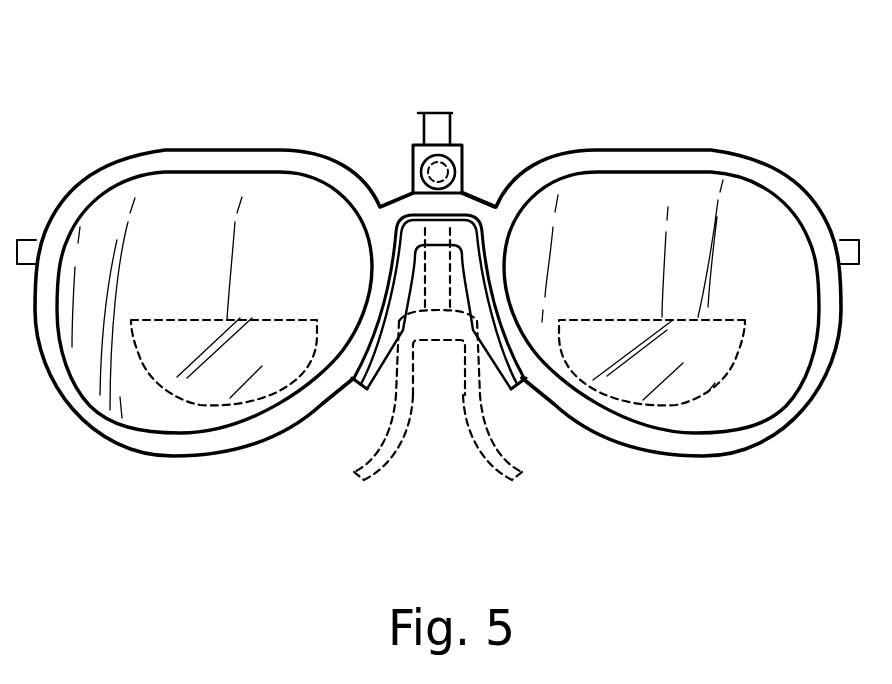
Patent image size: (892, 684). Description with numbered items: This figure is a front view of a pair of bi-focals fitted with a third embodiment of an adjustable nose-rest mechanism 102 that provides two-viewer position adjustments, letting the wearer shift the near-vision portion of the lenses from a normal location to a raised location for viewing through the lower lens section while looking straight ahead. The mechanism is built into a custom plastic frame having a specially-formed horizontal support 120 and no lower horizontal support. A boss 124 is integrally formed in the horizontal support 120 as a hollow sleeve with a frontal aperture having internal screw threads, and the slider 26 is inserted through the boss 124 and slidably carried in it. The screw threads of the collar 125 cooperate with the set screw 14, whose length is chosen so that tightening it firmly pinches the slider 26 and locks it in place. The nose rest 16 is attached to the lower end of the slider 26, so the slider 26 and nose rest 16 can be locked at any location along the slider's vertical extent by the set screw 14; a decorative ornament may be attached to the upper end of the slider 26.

The adjustable nose-rest mechanism 102 is at (93, 195).
The set screw 14 is at (463, 172).
The slider 26 is at (451, 128).
The boss 124 is at (413, 153).
The collar 125 is at (410, 166).
The horizontal support 120 is at (486, 210).
The nose rest 16 is at (516, 387).